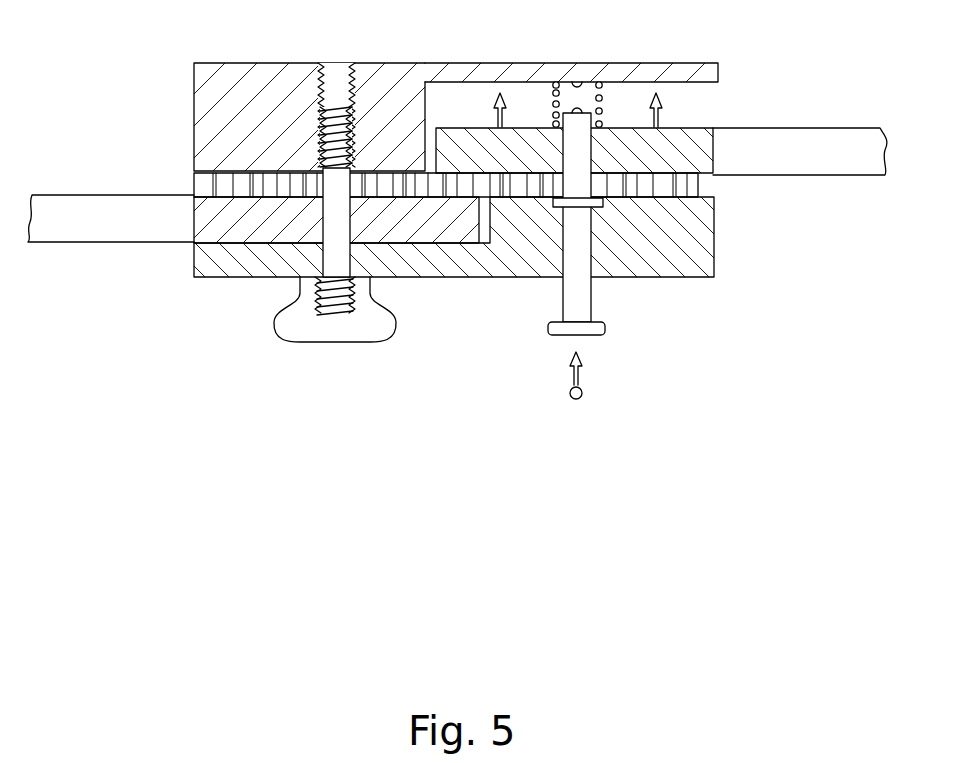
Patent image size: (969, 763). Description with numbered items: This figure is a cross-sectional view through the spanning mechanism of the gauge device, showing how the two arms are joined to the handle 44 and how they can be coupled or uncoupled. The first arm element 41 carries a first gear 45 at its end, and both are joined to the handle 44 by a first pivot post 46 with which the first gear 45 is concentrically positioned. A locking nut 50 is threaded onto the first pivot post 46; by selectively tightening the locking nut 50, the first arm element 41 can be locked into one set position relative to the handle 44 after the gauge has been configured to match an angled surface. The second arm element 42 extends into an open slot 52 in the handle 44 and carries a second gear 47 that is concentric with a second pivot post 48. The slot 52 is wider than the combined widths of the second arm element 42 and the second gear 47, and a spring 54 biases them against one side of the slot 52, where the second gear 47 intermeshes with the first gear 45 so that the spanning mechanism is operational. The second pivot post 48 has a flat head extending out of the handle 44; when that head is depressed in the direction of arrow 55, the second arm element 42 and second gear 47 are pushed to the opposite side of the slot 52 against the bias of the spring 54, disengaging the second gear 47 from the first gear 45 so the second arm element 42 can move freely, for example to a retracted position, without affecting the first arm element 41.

The first arm element 41 is at (113, 228).
The second arm element 42 is at (793, 137).
The handle 44 is at (480, 278).
The first gear 45 is at (223, 185).
The first pivot post 46 is at (333, 222).
The second gear 47 is at (695, 185).
The second pivot post 48 is at (582, 303).
The locking nut 50 is at (312, 330).
The open slot 52 is at (718, 103).
The spring 54 is at (558, 100).
The arrow 55 is at (578, 375).